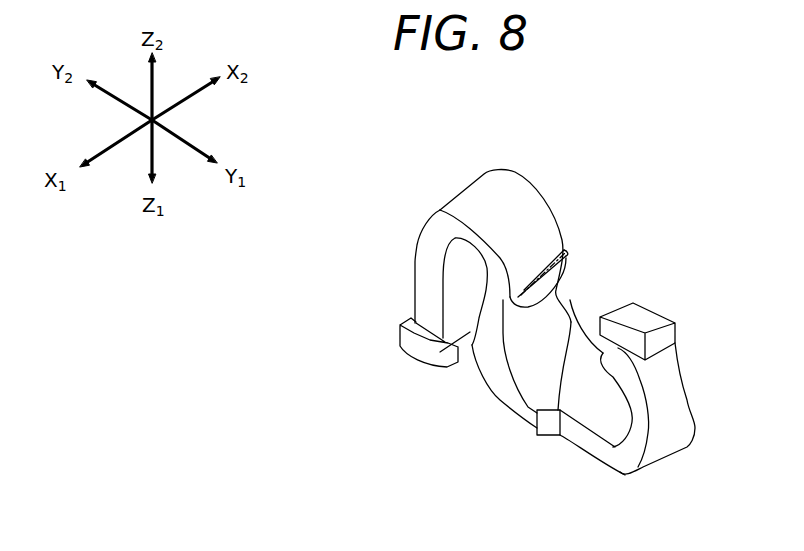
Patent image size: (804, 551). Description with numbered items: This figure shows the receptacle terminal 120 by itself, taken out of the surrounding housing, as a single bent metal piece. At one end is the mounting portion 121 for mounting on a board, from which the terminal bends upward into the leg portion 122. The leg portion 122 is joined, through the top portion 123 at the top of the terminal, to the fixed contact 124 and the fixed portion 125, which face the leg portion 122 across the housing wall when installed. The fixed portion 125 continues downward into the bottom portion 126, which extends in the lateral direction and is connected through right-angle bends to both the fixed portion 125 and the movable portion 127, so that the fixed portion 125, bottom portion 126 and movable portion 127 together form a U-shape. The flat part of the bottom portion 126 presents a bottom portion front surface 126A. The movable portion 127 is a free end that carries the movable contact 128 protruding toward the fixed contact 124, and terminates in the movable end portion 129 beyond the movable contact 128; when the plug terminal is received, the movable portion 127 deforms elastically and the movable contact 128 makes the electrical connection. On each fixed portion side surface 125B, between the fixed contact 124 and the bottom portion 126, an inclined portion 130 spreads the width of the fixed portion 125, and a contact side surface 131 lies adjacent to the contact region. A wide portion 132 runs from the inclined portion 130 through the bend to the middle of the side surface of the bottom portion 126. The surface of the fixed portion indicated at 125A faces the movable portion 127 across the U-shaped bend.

The receptacle terminal 120 is at (445, 176).
The mounting portion 121 is at (410, 357).
The leg portion 122 is at (415, 285).
The top portion 123 is at (511, 197).
The fixed contact 124 is at (512, 298).
The fixed portion 125 is at (558, 410).
The front surface of bent portion 125A is at (545, 325).
The fixed portion side surface 125B is at (505, 312).
The bottom portion 126 is at (528, 403).
The bottom portion front surface 126A is at (610, 406).
The movable portion 127 is at (663, 420).
The movable contact 128 is at (602, 322).
The movable end portion 129 is at (643, 317).
The inclined portion 130 is at (503, 350).
The contact side surface 131 is at (548, 296).
The wide portion 132 is at (540, 379).